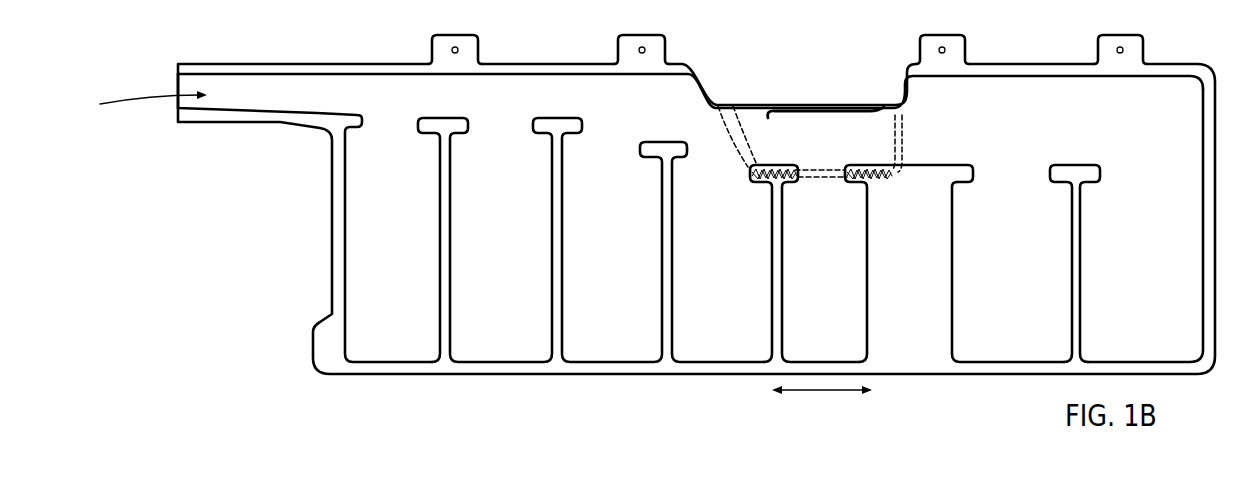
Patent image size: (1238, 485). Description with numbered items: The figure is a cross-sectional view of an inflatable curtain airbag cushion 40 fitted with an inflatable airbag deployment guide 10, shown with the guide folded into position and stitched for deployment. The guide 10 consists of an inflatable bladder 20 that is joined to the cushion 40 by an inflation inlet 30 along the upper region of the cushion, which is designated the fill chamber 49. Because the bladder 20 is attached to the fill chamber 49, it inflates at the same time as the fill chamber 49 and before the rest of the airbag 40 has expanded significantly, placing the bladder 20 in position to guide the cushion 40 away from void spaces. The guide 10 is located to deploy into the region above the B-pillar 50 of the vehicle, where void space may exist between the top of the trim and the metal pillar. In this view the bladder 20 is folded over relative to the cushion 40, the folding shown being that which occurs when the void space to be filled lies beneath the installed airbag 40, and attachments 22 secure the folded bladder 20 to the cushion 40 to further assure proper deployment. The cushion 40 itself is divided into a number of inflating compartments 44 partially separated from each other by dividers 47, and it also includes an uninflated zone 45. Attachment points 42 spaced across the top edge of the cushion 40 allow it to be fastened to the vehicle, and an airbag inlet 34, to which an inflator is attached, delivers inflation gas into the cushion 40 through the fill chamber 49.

The inflatable airbag deployment guide 10 is at (865, 36).
The inflatable bladder 20 is at (837, 140).
The attachments 22 is at (838, 167).
The inflation inlet 30 is at (744, 118).
The airbag inlet 34 is at (252, 92).
The inflatable curtain airbag cushion 40 is at (1002, 58).
The attachment points 42 is at (452, 46).
The compartments 44 is at (1149, 274).
The uninflated zone 45 is at (914, 274).
The dividers 47 is at (555, 272).
The fill chamber 49 is at (433, 97).
The B-pillar 50 is at (785, 409).